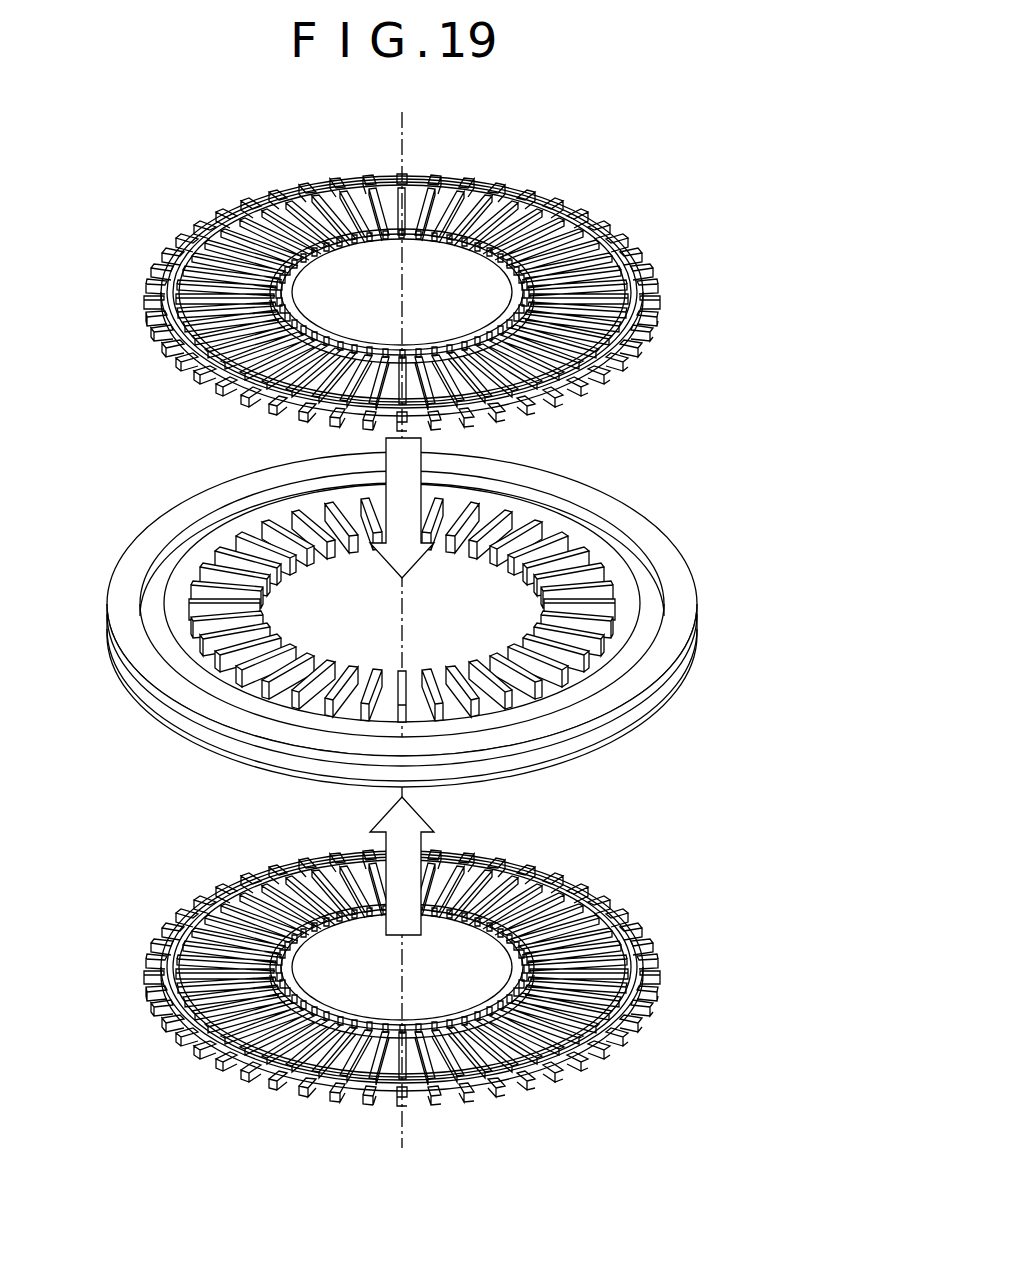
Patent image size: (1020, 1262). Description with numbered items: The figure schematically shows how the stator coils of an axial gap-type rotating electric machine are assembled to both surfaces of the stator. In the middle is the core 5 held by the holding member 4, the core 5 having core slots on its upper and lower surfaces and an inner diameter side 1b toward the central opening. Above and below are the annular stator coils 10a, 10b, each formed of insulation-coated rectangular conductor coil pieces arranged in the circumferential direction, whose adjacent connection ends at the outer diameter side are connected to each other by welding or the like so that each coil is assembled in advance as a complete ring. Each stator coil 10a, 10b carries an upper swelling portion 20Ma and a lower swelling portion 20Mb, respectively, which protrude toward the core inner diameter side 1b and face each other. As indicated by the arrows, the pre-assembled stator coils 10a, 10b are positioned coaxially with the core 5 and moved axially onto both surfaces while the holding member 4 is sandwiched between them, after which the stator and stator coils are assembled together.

The stator coil 10a is at (442, 302).
The upper swelling portion 20Ma is at (492, 271).
The holding member 4 is at (122, 598).
The core 5 is at (597, 562).
The inner diameter side 1b is at (493, 652).
The stator coil 10b is at (449, 977).
The lower swelling portion 20Mb is at (494, 945).